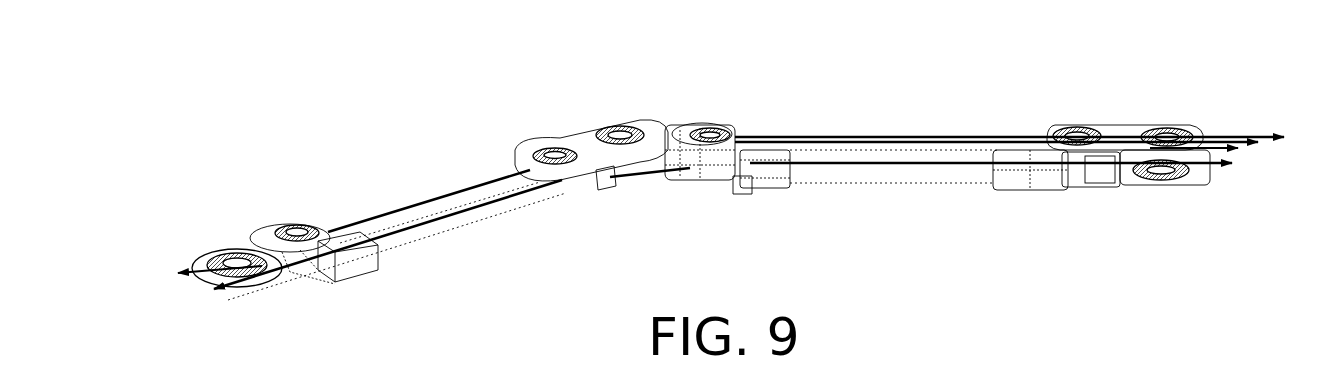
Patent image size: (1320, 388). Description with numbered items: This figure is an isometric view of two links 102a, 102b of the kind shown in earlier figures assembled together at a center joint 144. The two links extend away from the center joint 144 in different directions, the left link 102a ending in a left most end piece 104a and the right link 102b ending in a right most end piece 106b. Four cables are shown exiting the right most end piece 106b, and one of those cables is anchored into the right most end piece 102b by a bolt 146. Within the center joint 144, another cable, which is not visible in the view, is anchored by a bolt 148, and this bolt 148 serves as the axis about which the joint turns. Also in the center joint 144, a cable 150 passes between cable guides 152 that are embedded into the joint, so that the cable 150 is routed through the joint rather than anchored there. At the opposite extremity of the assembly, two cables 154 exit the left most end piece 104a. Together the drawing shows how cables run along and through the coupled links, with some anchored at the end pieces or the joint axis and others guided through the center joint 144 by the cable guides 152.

The link 102a is at (470, 235).
The link 102b is at (865, 173).
The left most end piece 104a is at (315, 290).
The right most end piece 106b is at (1093, 180).
The center joint 144 is at (1247, 150).
The bolt 146 is at (1090, 123).
The bolt 148 is at (632, 127).
The cable 150 is at (663, 183).
The cable guides 152 is at (617, 187).
The cables exiting left most end piece 154 is at (207, 292).